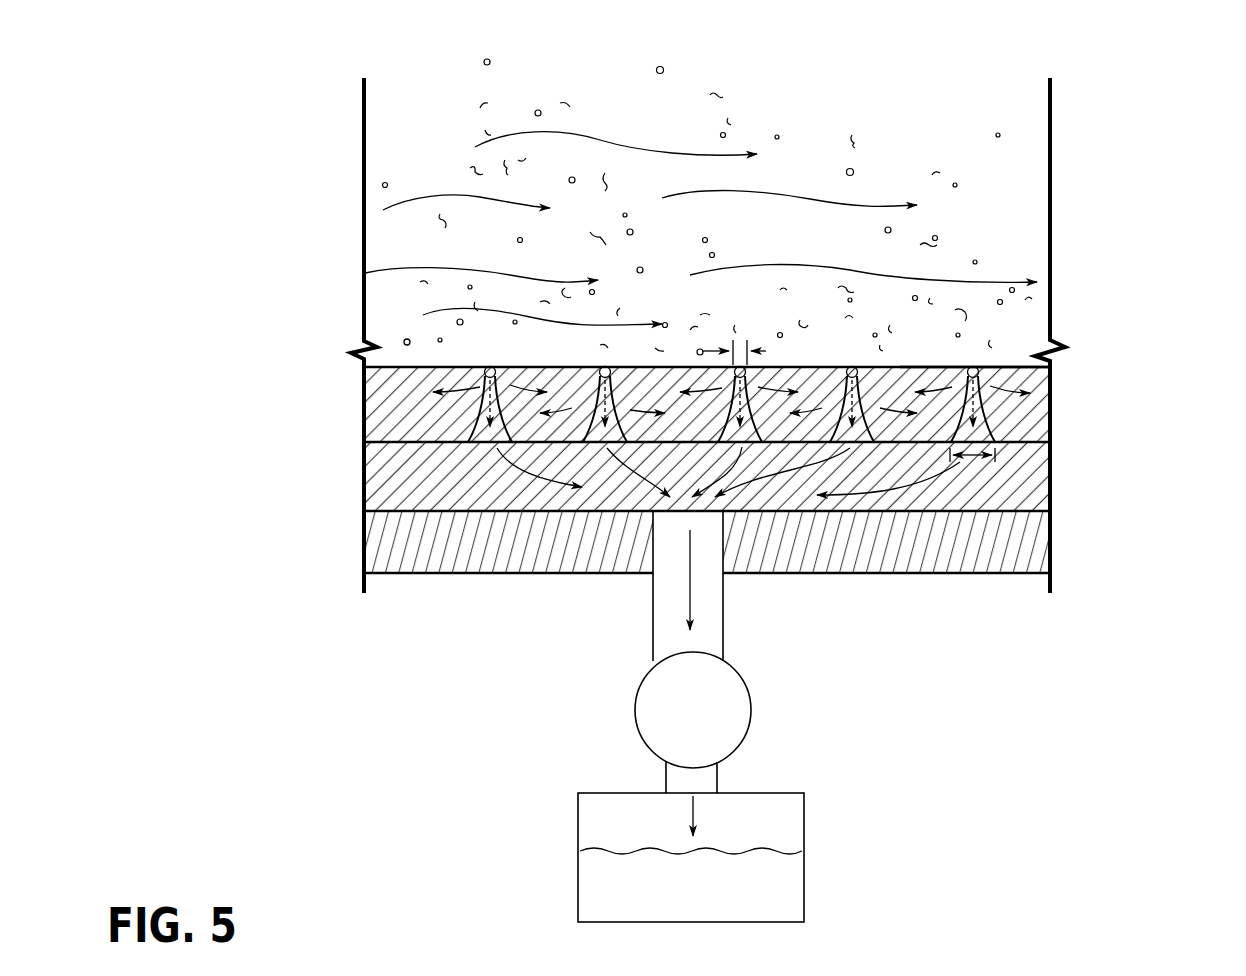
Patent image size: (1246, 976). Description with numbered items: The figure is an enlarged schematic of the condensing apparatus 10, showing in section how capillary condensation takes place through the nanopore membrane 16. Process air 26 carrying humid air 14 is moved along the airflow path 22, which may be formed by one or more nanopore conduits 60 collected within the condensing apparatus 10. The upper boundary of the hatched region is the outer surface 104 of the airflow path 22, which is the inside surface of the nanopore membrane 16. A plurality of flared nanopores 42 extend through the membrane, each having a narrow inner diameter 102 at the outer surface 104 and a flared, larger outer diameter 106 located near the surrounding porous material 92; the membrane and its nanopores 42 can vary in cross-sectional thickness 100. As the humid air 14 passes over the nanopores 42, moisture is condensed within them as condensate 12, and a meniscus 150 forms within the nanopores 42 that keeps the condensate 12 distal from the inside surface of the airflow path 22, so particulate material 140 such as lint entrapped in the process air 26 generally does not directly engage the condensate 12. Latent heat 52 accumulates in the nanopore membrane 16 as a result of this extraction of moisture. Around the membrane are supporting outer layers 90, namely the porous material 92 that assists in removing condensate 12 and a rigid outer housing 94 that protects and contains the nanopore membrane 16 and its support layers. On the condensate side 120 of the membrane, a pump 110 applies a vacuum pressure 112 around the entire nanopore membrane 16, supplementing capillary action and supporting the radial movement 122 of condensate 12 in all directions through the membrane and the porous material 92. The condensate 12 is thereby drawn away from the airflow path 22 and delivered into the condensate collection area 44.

The condensing apparatus 10 is at (722, 531).
The condensate 12 is at (477, 437).
The humid air 14 is at (657, 152).
The nanopore membrane 16 is at (1018, 365).
The airflow path 22 is at (352, 145).
The process air 26 is at (632, 189).
The nanopores 42 is at (497, 373).
The condensate collection area 44 is at (600, 872).
The latent heat 52 is at (407, 335).
The nanopore conduits 60 is at (352, 338).
The outer layers 90 is at (1070, 497).
The porous material 92 is at (1028, 478).
The rigid outer housing 94 is at (408, 560).
The thickness 100 is at (742, 335).
The narrow inner diameter 102 is at (764, 350).
The outer surface of the airflow path 104 is at (997, 367).
The larger outer diameter 106 is at (973, 462).
The pump 110 is at (752, 712).
The vacuum pressure 112 is at (355, 473).
The condensate side 120 is at (620, 600).
The radial movement 122 is at (483, 403).
The particulate material 140 is at (410, 343).
The meniscus 150 is at (1040, 385).